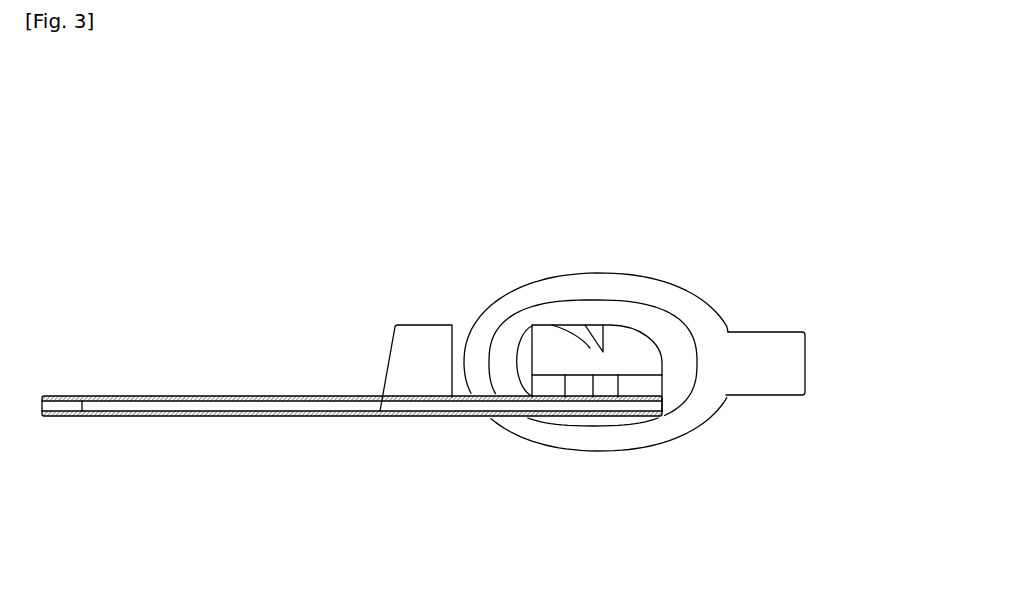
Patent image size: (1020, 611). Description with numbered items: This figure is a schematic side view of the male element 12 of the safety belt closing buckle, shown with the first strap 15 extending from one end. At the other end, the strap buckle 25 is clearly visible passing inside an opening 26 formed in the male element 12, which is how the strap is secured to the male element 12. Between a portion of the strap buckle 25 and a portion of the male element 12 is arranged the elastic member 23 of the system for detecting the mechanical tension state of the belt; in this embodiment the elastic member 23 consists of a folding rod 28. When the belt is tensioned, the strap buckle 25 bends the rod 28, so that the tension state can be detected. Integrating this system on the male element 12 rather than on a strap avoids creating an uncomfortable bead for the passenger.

The male element 12 is at (138, 407).
The first strap 15 is at (783, 347).
The elastic member 23 is at (556, 316).
The strap buckle 25 is at (638, 297).
The opening 26 is at (502, 360).
The folding rod 28 is at (550, 353).